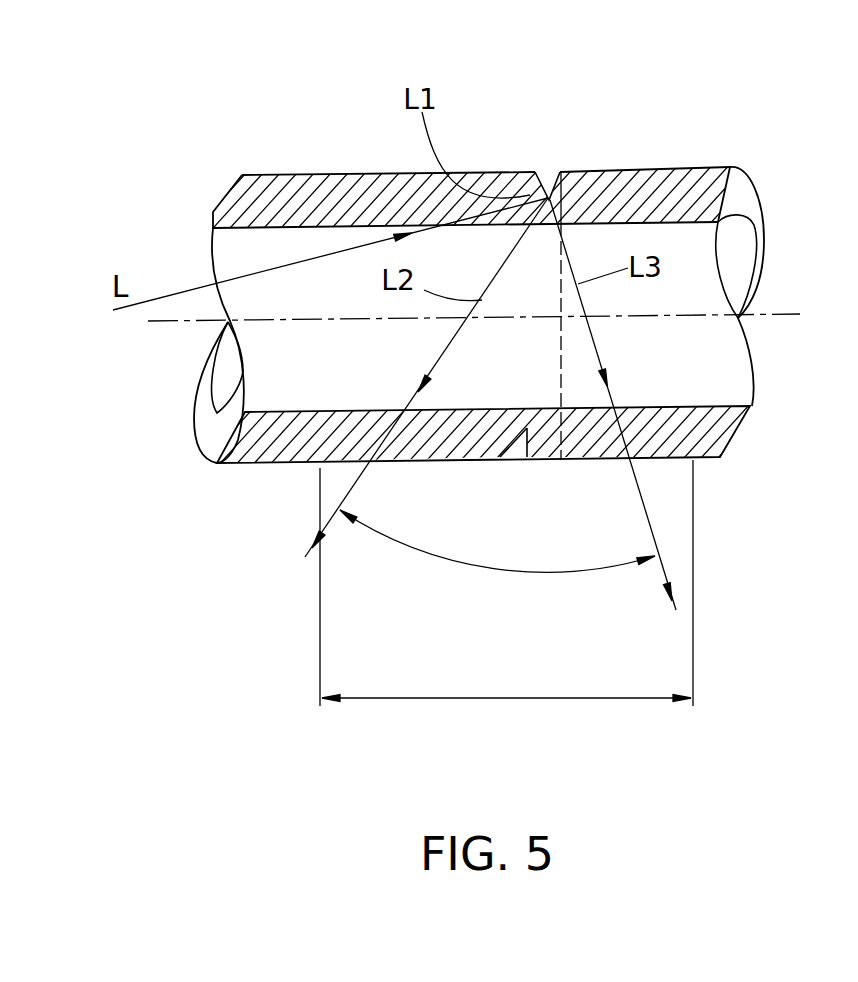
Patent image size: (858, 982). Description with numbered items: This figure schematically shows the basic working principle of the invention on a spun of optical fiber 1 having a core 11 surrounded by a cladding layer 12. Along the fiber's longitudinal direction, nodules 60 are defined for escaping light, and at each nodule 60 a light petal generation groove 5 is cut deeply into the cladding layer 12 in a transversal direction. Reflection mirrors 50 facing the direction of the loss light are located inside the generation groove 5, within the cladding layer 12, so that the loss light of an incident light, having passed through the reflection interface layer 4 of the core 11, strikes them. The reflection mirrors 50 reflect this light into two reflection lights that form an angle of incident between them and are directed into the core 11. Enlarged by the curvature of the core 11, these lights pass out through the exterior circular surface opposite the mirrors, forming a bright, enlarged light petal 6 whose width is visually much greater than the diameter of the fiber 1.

The spun of optical fiber 1 is at (238, 515).
The reflection interface layer 4 is at (303, 222).
The light petal generation groove 5 is at (558, 172).
The light petal 6 is at (446, 580).
The core 11 is at (275, 378).
The cladding layer 12 is at (243, 210).
The reflection mirror 50 is at (545, 173).
The nodule 60 is at (506, 583).